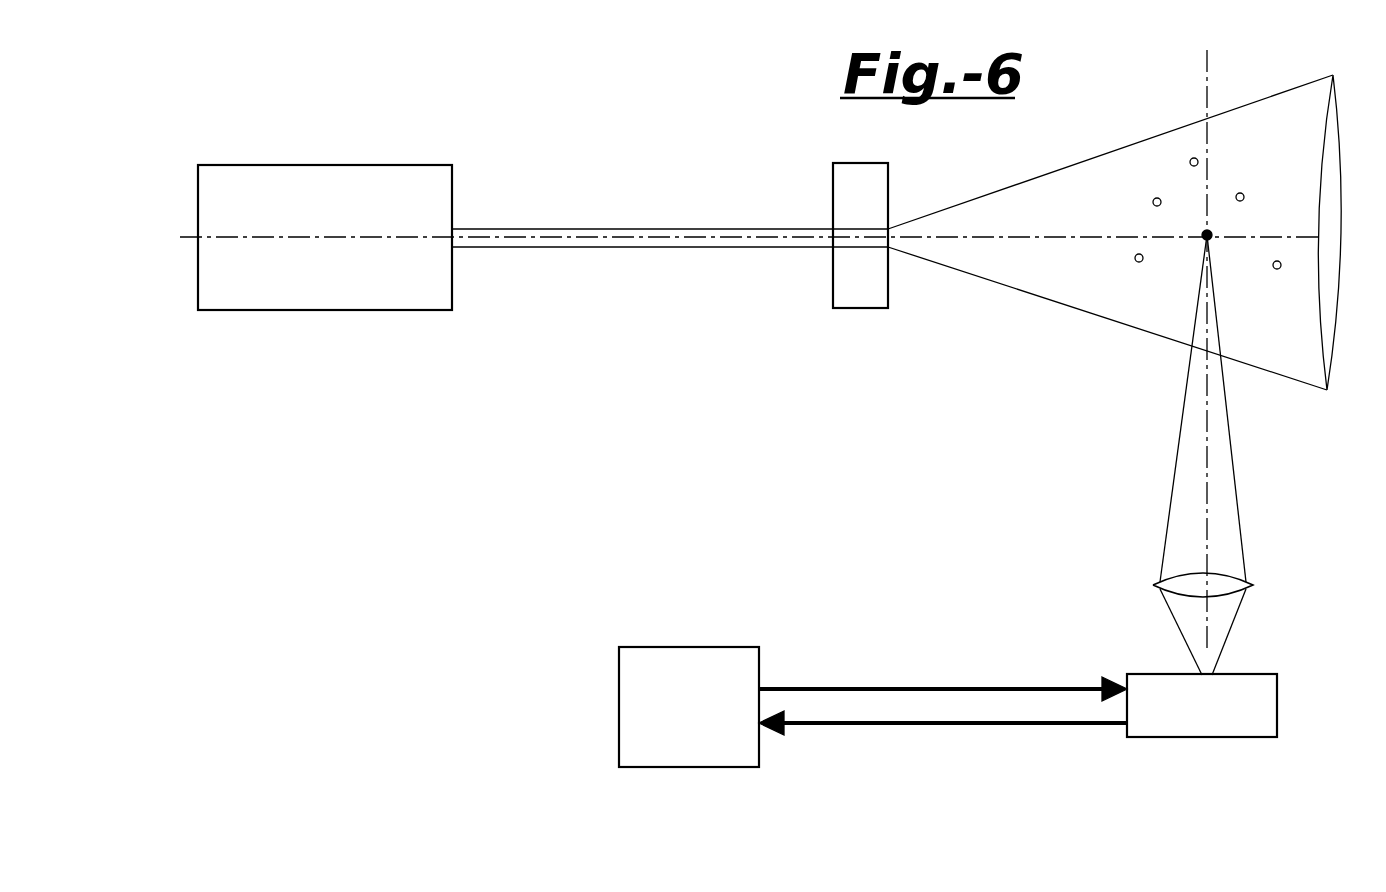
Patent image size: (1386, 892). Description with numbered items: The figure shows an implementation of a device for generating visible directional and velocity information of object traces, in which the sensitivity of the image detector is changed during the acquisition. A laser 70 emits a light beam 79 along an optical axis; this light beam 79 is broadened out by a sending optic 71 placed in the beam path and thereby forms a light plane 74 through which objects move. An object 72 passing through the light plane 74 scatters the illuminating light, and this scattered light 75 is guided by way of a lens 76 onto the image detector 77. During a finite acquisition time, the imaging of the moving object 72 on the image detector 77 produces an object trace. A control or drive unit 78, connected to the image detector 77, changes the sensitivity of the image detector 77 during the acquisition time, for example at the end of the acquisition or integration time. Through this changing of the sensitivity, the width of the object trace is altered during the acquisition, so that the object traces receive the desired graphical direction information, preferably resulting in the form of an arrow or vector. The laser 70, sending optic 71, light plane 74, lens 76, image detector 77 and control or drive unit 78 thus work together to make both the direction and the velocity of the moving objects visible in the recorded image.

The laser 70 is at (421, 165).
The sending optic 71 is at (843, 163).
The object 72 is at (1212, 238).
The light plane 74 is at (1150, 133).
The scattered light 75 is at (1233, 480).
The lens 76 is at (1253, 582).
The image detector 77 is at (1258, 674).
The control or drive unit 78 is at (638, 650).
The light beam 79 is at (662, 229).